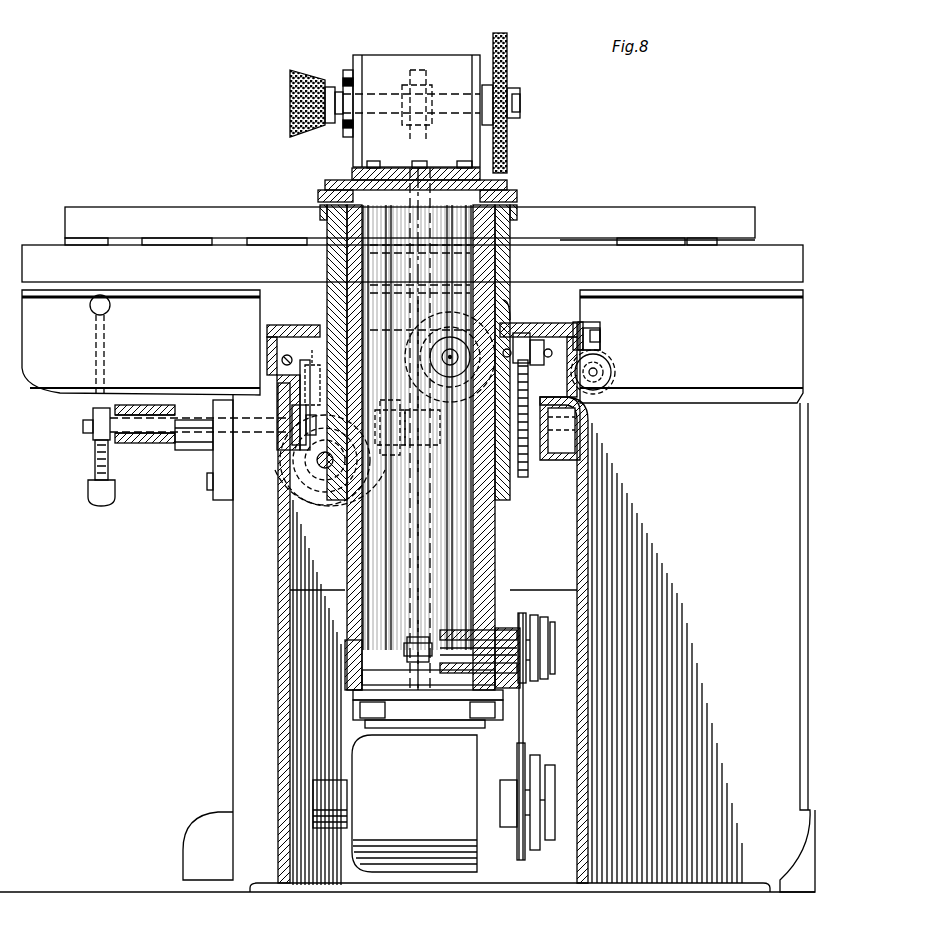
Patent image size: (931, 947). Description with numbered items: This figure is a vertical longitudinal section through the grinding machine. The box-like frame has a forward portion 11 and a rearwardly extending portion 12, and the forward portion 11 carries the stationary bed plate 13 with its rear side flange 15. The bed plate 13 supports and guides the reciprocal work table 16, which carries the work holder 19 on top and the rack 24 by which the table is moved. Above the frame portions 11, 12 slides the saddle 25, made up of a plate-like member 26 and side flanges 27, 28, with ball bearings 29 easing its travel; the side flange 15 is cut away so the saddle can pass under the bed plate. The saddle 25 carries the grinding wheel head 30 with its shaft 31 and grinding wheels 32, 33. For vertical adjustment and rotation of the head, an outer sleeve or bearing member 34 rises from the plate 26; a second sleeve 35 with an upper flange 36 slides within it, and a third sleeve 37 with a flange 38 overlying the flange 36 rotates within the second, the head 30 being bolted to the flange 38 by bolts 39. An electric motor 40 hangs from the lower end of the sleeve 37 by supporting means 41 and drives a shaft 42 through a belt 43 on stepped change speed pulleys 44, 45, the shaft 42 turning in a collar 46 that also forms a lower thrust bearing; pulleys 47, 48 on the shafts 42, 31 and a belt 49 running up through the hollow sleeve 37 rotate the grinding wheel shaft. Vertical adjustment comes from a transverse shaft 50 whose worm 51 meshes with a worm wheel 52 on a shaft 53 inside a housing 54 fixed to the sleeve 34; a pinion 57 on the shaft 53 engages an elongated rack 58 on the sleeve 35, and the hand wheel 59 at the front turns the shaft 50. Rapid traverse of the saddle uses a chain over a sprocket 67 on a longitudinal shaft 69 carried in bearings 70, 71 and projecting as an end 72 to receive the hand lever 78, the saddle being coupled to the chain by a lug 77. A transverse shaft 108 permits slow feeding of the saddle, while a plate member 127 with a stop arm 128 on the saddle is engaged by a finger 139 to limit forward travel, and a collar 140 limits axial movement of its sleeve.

The forward portion 11 is at (232, 705).
The rearwardly extending portion 12 is at (285, 568).
The bed plate 13 is at (635, 262).
The side flange 15 is at (66, 366).
The work table 16 is at (780, 248).
The work holder 19 is at (682, 208).
The rack 24 is at (450, 336).
The saddle 25 is at (552, 323).
The plate-like member 26 is at (300, 334).
The side flange 27 is at (611, 366).
The side flange 28 is at (277, 339).
The ball bearings 29 is at (282, 360).
The grinding wheel head 30 is at (375, 60).
The shaft 31 is at (440, 95).
The grinding wheel 32 is at (500, 34).
The grinding wheel 33 is at (305, 72).
The sleeve or bearing member 34 is at (330, 266).
The second cylindrical member or sleeve 35 is at (362, 224).
The flange 36 is at (510, 189).
The third cylindrical member or sleeve 37 is at (368, 271).
The flange 38 is at (480, 178).
The bolts 39 is at (460, 162).
The electric motor 40 is at (405, 870).
The supporting means 41 is at (372, 713).
The shaft 42 is at (462, 640).
The belt 43 is at (524, 717).
The change speed pulley 44 is at (540, 838).
The change speed pulley 45 is at (555, 629).
The collar 46 is at (352, 665).
The pulley 47 is at (415, 640).
The pulley 48 is at (405, 128).
The belt 49 is at (428, 484).
The shaft 50 is at (322, 470).
The worm 51 is at (300, 480).
The worm wheel 52 is at (314, 380).
The shaft 53 is at (394, 425).
The housing 54 is at (292, 410).
The pinion 57 is at (437, 425).
The rack 58 is at (430, 518).
The hand wheel 59 is at (335, 520).
The sprocket 67 is at (528, 458).
The shaft 69 is at (163, 433).
The bearing 70 is at (570, 455).
The bearing 71 is at (200, 450).
The outwardly projecting end 72 is at (93, 435).
The lug 77 is at (521, 333).
The hand lever 78 is at (100, 506).
The shaft 108 is at (508, 300).
The plate member 127 is at (583, 330).
The stop arm 128 is at (598, 340).
The finger 139 is at (604, 338).
The collar 140 is at (598, 394).